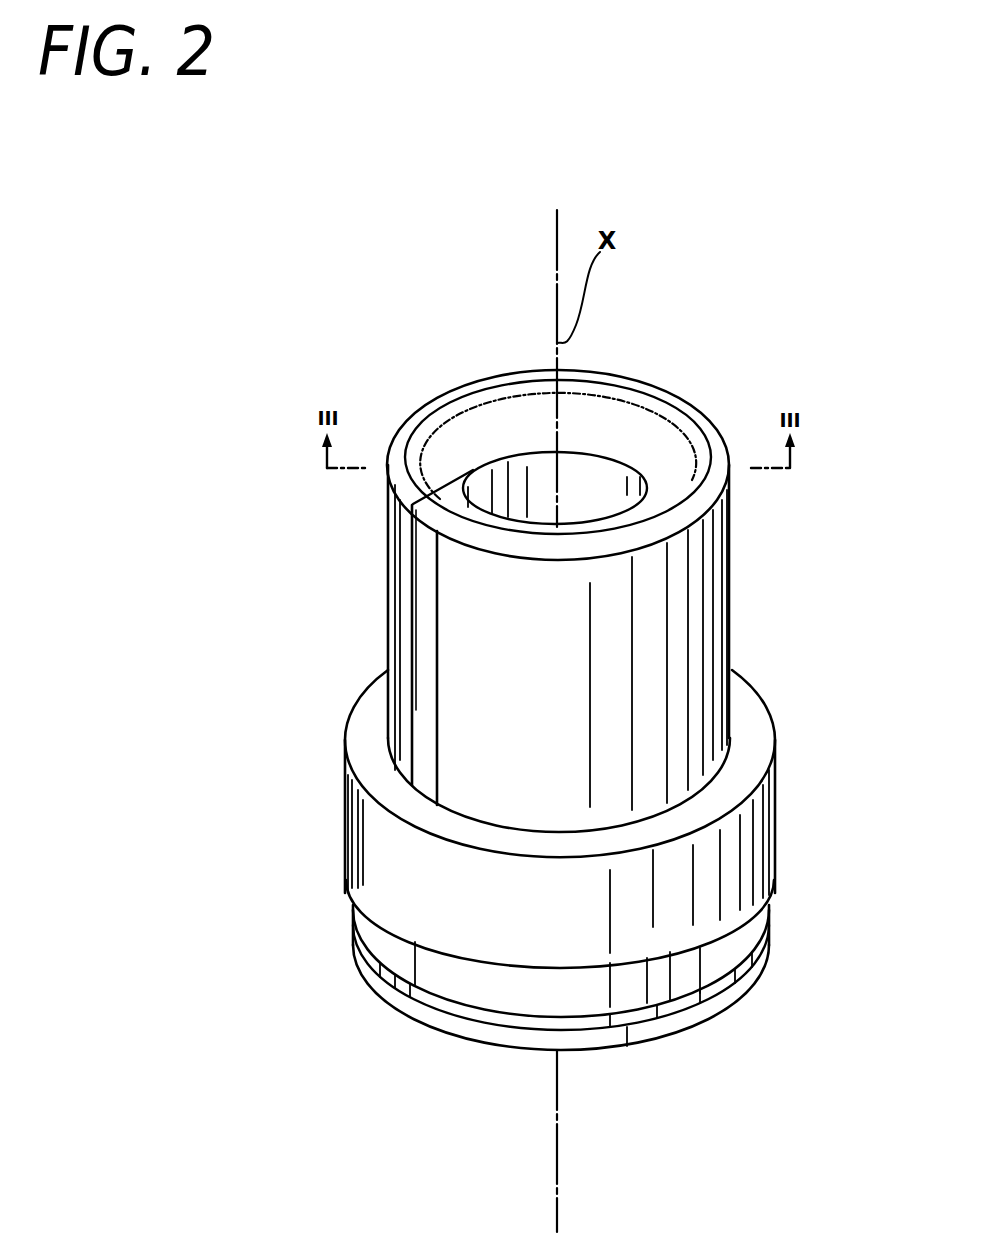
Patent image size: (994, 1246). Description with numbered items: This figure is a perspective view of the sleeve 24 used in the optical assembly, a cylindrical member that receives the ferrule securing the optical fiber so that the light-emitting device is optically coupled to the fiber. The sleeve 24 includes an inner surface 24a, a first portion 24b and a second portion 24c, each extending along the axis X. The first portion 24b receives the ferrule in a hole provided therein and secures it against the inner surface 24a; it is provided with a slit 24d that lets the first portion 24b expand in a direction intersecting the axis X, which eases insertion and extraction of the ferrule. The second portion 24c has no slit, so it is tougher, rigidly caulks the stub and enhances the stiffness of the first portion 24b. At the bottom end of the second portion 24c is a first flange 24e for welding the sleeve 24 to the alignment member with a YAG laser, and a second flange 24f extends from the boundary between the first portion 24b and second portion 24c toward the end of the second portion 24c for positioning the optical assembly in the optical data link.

The sleeve 24 is at (817, 348).
The inner surface 24a is at (607, 493).
The first portion 24b is at (852, 428).
The second portion 24c is at (852, 715).
The slit 24d is at (432, 590).
The first flange 24e is at (418, 1010).
The second flange 24f is at (349, 832).